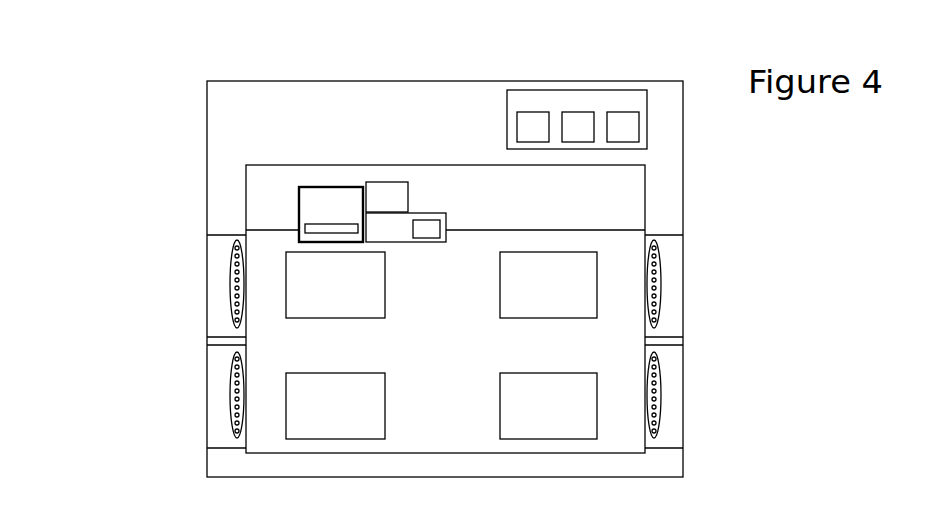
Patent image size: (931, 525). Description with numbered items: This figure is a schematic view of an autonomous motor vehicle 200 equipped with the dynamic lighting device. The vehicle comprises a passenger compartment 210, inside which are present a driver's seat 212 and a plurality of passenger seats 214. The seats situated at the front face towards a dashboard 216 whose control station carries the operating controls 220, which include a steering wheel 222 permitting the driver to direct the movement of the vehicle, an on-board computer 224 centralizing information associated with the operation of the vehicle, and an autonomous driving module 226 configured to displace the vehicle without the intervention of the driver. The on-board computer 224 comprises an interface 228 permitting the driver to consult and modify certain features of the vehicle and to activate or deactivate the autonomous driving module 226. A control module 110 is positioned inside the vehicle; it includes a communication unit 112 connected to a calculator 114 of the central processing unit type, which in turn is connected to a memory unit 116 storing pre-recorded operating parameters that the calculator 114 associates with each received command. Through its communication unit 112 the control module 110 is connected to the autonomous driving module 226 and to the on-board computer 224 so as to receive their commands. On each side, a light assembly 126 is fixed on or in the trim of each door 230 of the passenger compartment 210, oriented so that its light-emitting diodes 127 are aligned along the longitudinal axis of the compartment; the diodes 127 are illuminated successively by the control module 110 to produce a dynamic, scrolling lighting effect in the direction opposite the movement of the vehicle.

The autonomous motor vehicle 200 is at (153, 83).
The dashboard 216 is at (245, 167).
The passenger compartment 210 is at (445, 291).
The door 230 is at (207, 327).
The light assembly 126 is at (235, 247).
The light-emitting diodes 127 is at (232, 312).
The driver's seat 212 is at (335, 285).
The passenger seats 214 is at (441, 345).
The operating controls 220 is at (331, 214).
The steering wheel 222 is at (355, 224).
The autonomous driving module 226 is at (387, 197).
The on-board computer 224 is at (406, 227).
The interface 228 is at (426, 229).
The control module 110 is at (577, 119).
The communication unit 112 is at (533, 127).
The calculator 114 is at (578, 127).
The memory unit 116 is at (623, 127).